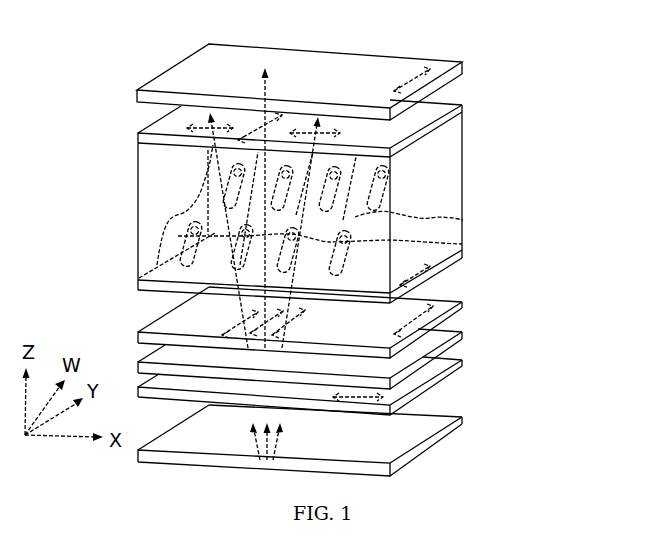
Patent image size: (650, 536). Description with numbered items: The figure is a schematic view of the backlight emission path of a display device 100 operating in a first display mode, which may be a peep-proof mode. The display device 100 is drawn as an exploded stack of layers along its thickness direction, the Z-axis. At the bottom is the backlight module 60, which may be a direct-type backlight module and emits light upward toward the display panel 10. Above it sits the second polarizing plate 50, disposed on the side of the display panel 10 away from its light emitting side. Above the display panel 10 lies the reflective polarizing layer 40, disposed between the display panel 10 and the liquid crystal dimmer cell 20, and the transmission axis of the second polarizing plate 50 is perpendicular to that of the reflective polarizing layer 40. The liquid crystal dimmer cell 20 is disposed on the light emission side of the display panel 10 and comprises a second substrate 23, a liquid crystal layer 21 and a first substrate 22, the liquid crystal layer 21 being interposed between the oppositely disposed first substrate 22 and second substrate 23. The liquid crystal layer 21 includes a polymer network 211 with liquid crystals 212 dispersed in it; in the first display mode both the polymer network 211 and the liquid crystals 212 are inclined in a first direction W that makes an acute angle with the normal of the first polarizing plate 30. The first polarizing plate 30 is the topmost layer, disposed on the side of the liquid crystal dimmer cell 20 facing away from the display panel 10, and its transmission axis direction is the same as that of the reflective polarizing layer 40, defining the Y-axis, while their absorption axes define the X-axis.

The display device 100 is at (156, 43).
The first polarizing plate 30 is at (462, 62).
The first substrate 22 is at (462, 105).
The liquid crystal layer 21 is at (462, 178).
The polymer network 211 is at (463, 220).
The liquid crystals 212 is at (462, 244).
The second substrate 23 is at (462, 252).
The liquid crystal dimmer cell 20 is at (382, 200).
The reflective polarizing layer 40 is at (462, 302).
The display panel 10 is at (462, 332).
The second polarizing plate 50 is at (462, 360).
The backlight module 60 is at (462, 417).